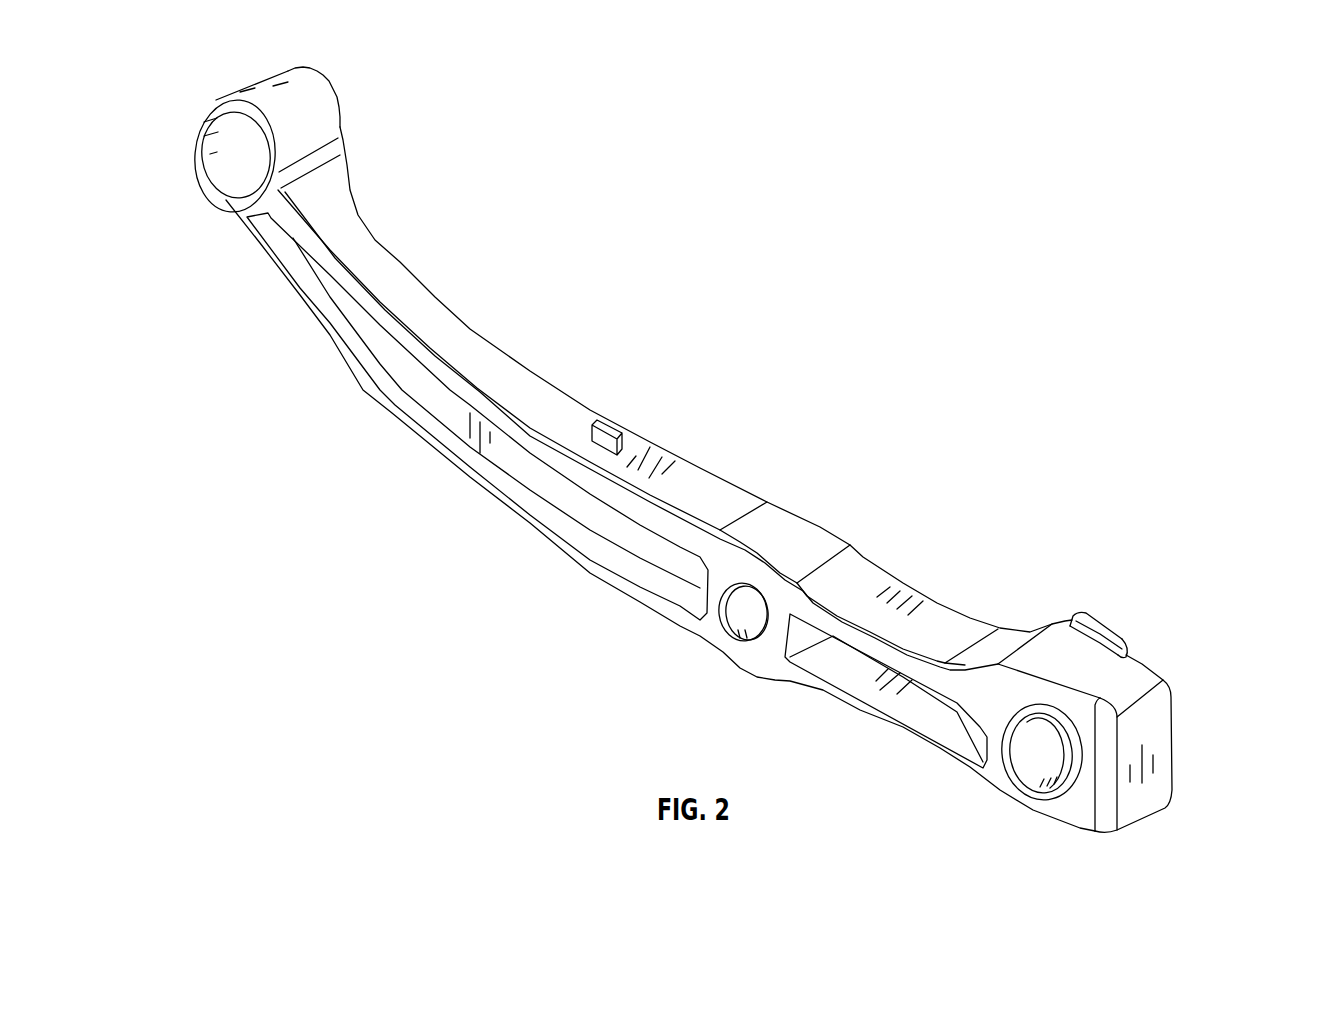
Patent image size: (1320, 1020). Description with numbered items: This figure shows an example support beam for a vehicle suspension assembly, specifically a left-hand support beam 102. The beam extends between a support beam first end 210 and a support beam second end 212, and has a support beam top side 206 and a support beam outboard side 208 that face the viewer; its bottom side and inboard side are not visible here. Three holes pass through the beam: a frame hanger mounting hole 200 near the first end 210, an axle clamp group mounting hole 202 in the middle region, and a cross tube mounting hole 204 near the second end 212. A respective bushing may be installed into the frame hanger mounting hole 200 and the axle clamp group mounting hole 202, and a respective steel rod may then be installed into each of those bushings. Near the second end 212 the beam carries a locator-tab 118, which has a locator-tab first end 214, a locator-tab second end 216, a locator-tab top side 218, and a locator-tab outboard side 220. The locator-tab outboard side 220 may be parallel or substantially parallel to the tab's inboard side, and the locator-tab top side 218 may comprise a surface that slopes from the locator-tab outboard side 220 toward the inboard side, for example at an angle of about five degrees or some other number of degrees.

The left-hand support beam 102 is at (745, 337).
The locator-tab 118 is at (1120, 612).
The frame hanger mounting hole 200 is at (240, 152).
The axle clamp group mounting hole 202 is at (757, 610).
The cross tube mounting hole 204 is at (1053, 748).
The support beam top side 206 is at (716, 498).
The support beam outboard side 208 is at (380, 428).
The support beam first end 210 is at (238, 84).
The support beam second end 212 is at (1155, 737).
The locator-tab first end 214 is at (1073, 606).
The locator-tab second end 216 is at (1128, 651).
The locator-tab top side 218 is at (1095, 626).
The locator-tab outboard side 220 is at (1097, 638).